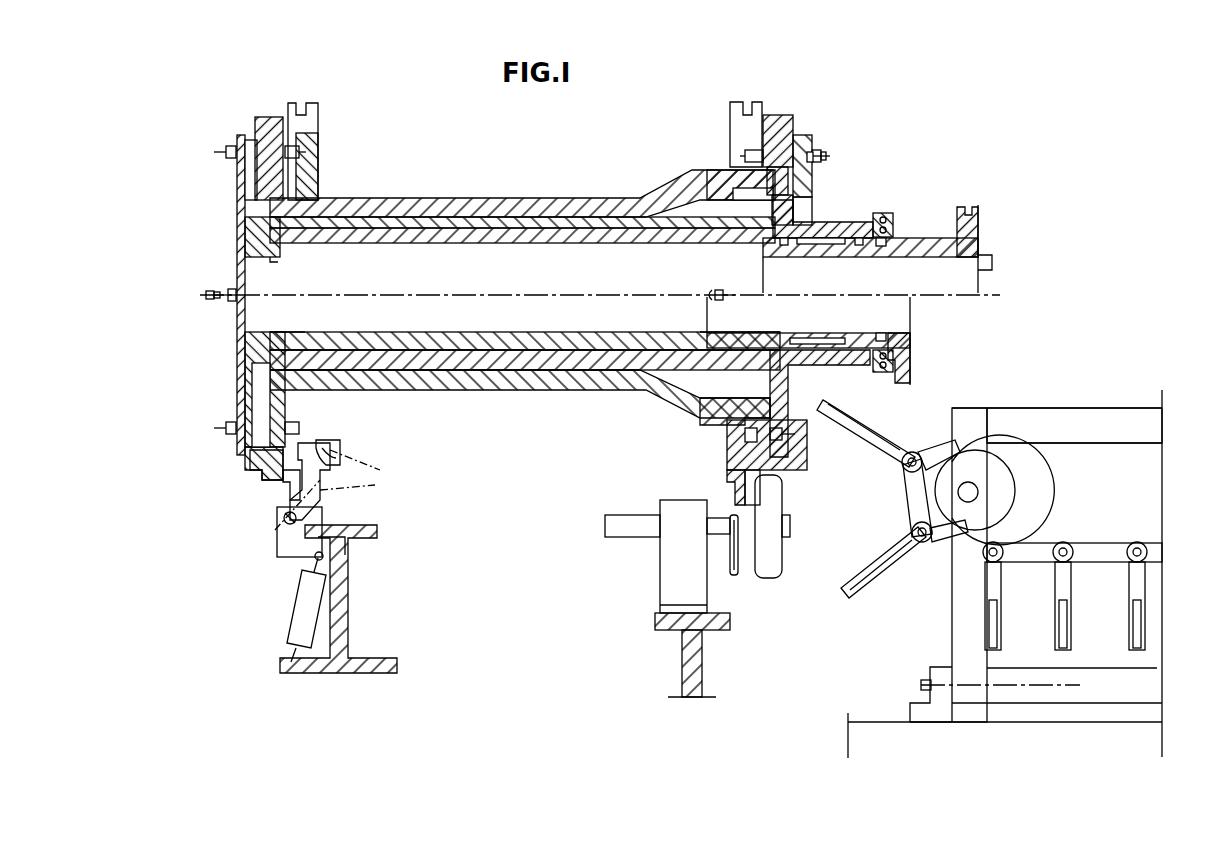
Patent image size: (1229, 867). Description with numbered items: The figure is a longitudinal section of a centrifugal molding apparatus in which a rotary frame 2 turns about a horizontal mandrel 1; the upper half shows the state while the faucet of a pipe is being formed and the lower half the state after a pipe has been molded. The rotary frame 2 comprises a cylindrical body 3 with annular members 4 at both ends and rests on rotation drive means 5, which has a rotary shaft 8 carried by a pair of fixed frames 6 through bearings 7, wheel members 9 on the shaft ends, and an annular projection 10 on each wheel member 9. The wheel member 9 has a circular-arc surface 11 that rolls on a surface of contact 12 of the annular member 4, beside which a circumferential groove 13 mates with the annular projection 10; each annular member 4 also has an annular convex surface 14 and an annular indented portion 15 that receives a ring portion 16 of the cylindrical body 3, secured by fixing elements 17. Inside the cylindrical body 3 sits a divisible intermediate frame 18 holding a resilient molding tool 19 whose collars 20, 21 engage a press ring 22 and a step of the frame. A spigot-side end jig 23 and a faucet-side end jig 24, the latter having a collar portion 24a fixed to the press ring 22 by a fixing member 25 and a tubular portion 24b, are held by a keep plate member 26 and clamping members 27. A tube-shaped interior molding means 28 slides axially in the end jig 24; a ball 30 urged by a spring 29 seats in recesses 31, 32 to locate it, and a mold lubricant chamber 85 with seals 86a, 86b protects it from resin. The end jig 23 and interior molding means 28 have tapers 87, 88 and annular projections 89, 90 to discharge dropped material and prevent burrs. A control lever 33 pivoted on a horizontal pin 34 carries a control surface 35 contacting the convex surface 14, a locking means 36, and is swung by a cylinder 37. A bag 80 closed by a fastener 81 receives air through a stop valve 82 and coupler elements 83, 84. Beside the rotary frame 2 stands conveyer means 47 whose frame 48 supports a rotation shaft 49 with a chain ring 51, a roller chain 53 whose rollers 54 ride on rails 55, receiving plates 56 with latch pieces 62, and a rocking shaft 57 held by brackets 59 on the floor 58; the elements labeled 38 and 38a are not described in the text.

The mandrel 1 is at (472, 293).
The rotary frame 2 is at (803, 100).
The cylindrical body 3 is at (537, 253).
The annular member 4 is at (797, 118).
The rotation drive means 5 is at (752, 625).
The fixed frame 6 is at (348, 620).
The bearing 7 is at (682, 583).
The rotary shaft 8 is at (626, 537).
The wheel member 9 is at (782, 550).
The annular projection 10 is at (736, 575).
The surface of circular-arc configuration 11 is at (768, 578).
The surface of contact 12 is at (262, 478).
The circumferential groove 13 is at (287, 496).
The annular convex surface 14 is at (310, 146).
The annular indented portion 15 is at (745, 156).
The ring portion 16 is at (814, 158).
The fixing element 17 is at (228, 436).
The intermediate frame 18 is at (520, 372).
The resilient molding tool 19 is at (575, 355).
The collar 20 is at (700, 406).
The collar 21 is at (312, 372).
The press ring 22 is at (735, 194).
The end jig 23 is at (240, 352).
The end jig 24 is at (843, 314).
The collar portion 24a is at (812, 230).
The tubular portion 24b is at (812, 366).
The fixing member 25 is at (812, 190).
The keep plate member 26 is at (812, 140).
The clamping member 27 is at (826, 156).
The interior molding means 28 is at (982, 232).
The spring 29 is at (892, 226).
The ball 30 is at (882, 247).
The recess 31 is at (822, 338).
The recess 32 is at (947, 257).
The control lever 33 is at (330, 480).
The horizontal pin 34 is at (282, 535).
The control surface 35 is at (326, 452).
The locking means 36 is at (340, 548).
The cylinder 37 is at (322, 605).
The inner mandrel tube 38 is at (465, 352).
The inner tube section 38a is at (702, 244).
The conveyer means 47 is at (1170, 614).
The frame 48 is at (955, 614).
The rotation shaft 49 is at (978, 494).
The chain ring 51 is at (1023, 470).
The roller chain 53 is at (1105, 540).
The roller 54 is at (1148, 545).
The rail 55 is at (1158, 431).
The receiving plate 56 is at (1060, 578).
The rocking shaft 57 is at (920, 685).
The floor 58 is at (888, 722).
The bracket 59 is at (935, 722).
The latch piece 62 is at (850, 446).
The bag 80 is at (392, 332).
The fastener 81 is at (722, 290).
The stop valve 82 is at (222, 297).
The coupler element 83 is at (231, 288).
The coupler element 84 is at (216, 292).
The mold lubricant chamber 85 is at (822, 245).
The seal 86a is at (783, 246).
The seal 86b is at (858, 246).
The taper 87 is at (282, 257).
The taper 88 is at (994, 262).
The annular projection 89 is at (308, 335).
The annular projection 90 is at (706, 334).